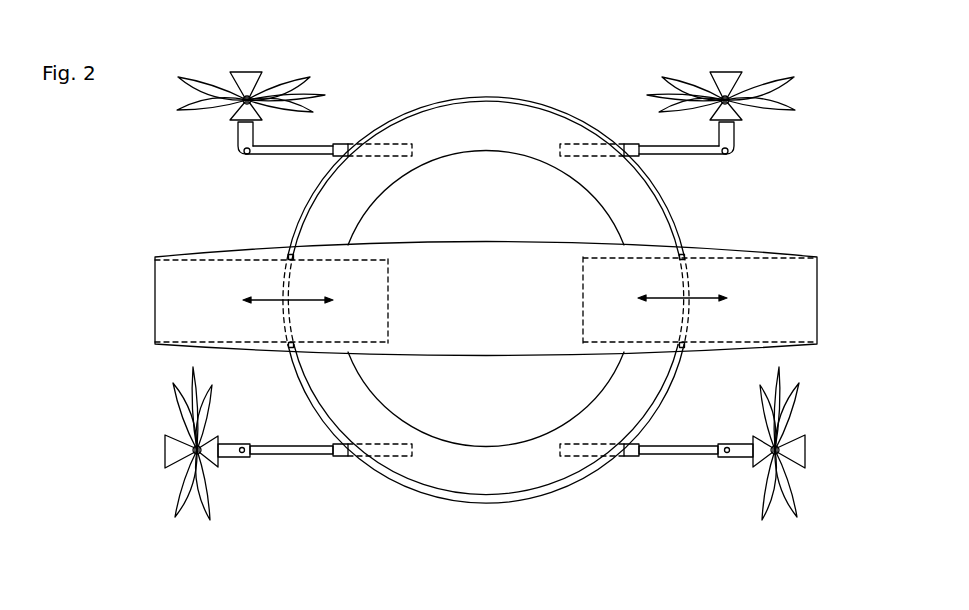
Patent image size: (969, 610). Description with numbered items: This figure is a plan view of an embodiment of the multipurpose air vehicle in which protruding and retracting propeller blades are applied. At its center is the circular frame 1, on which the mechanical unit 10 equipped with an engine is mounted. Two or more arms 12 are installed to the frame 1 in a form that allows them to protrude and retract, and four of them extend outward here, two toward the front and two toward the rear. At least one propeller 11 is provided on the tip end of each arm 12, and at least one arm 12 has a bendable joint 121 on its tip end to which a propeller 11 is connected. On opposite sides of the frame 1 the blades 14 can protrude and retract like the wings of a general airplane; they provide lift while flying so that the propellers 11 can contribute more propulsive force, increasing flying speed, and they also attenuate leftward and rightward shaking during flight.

The frame 1 is at (676, 221).
The mechanical unit 10 is at (486, 144).
The propeller 11 is at (243, 71).
The arm 12 is at (296, 157).
The bendable joint 121 is at (245, 158).
The blade 14 is at (181, 247).